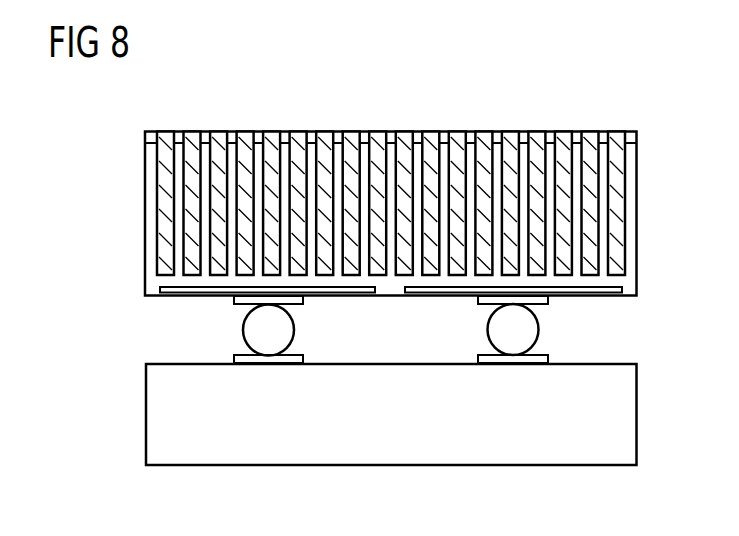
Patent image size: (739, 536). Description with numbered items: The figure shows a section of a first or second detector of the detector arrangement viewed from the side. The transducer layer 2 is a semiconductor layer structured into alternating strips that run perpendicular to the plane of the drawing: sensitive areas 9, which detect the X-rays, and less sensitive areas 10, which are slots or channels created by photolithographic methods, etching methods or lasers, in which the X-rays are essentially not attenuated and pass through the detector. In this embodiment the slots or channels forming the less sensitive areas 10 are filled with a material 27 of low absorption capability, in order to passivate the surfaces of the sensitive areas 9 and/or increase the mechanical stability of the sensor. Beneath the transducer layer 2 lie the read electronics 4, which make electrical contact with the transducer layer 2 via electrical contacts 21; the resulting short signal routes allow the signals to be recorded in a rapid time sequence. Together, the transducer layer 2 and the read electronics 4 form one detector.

The transducer layer 2 is at (118, 207).
The read electronics 4 is at (145, 413).
The sensitive areas 9 is at (216, 143).
The less sensitive areas 10 is at (430, 143).
The electrical contacts 21 is at (540, 328).
The material of low absorption capability 27 is at (350, 142).